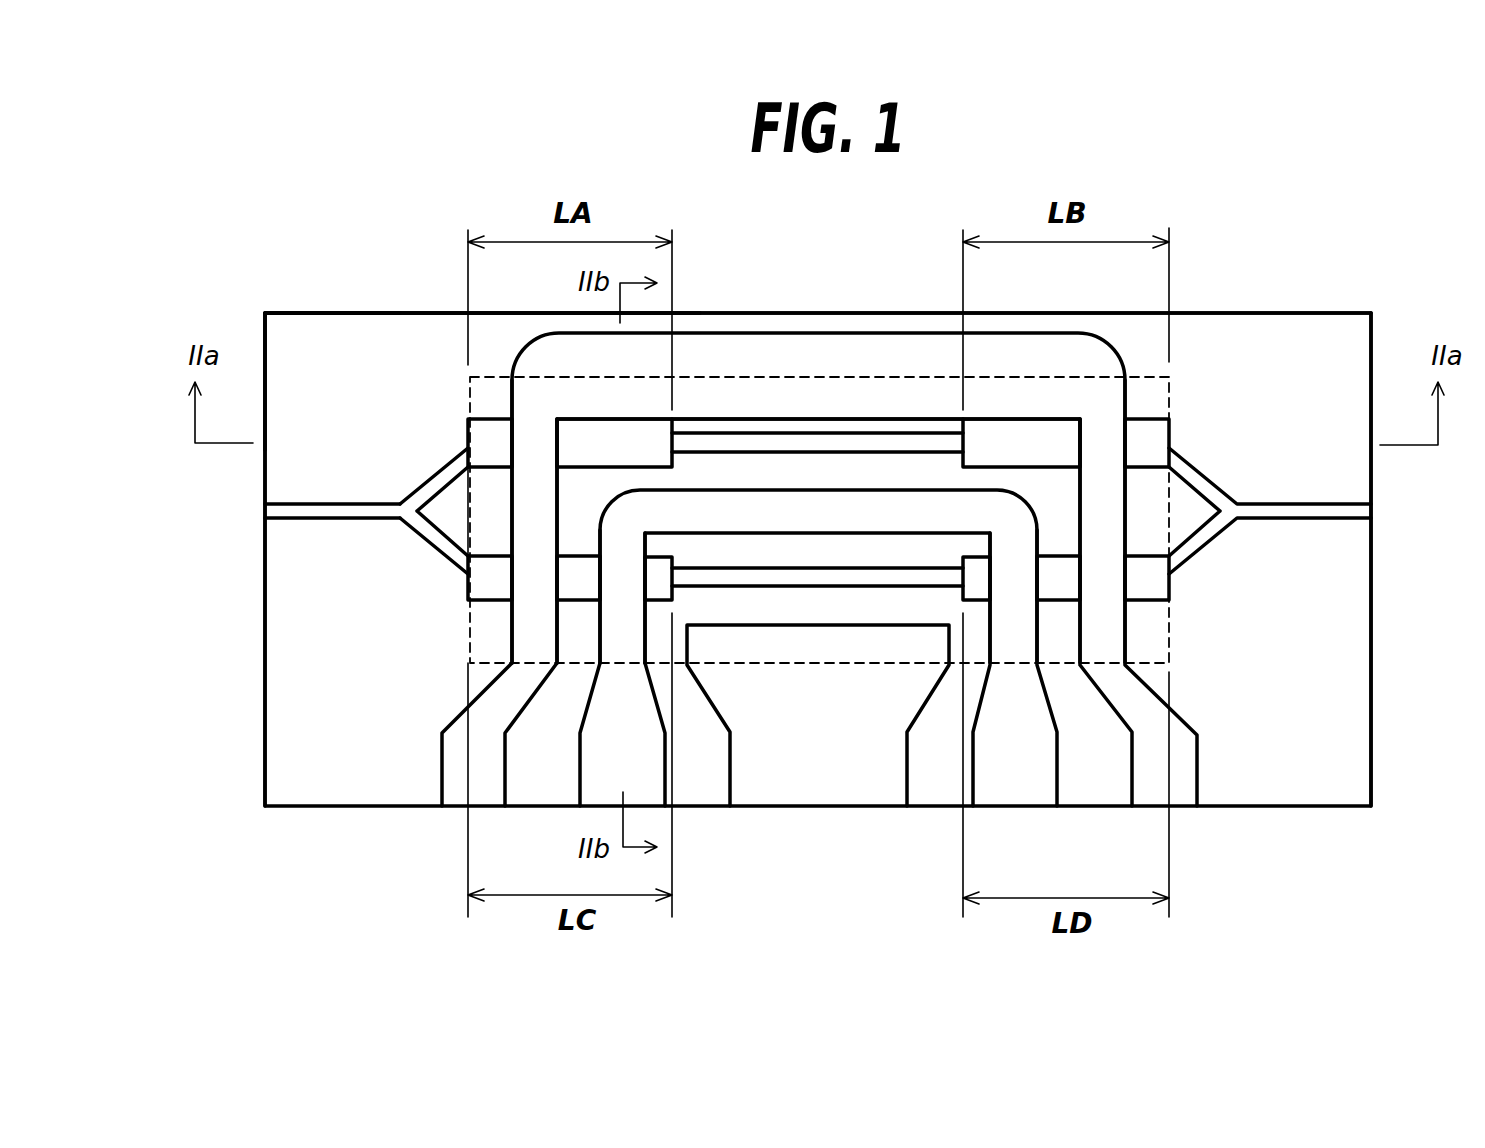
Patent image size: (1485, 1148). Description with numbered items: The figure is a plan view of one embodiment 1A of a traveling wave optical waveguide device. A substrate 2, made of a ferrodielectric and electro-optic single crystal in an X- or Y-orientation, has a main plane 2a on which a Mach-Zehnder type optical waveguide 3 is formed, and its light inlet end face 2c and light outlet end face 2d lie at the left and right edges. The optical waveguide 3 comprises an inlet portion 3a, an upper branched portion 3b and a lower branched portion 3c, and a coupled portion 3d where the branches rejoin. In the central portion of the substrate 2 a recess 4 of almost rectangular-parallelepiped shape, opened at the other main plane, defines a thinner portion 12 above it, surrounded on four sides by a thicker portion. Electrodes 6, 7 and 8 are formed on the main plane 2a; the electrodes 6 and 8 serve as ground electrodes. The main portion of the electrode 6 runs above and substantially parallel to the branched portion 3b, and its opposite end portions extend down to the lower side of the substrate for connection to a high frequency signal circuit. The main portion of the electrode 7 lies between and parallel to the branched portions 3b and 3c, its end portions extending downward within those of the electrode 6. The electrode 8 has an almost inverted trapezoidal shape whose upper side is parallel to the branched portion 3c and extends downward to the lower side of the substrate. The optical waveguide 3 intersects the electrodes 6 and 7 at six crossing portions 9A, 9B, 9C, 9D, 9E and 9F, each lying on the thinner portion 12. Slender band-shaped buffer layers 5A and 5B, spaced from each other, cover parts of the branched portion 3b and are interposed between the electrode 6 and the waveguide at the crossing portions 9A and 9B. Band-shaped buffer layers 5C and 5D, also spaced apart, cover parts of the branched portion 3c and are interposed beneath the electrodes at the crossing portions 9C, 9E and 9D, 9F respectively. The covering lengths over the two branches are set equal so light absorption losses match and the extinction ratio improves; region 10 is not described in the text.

The traveling wave optical waveguide 1A is at (1298, 294).
The substrate 2 is at (1187, 338).
The main plane 2a is at (448, 338).
The light inlet end face 2c is at (263, 658).
The light outlet end face 2d is at (1372, 643).
The optical waveguide 3 is at (404, 474).
The inlet portion 3a is at (305, 507).
The branched portion 3b is at (842, 443).
The branched portion 3c is at (843, 577).
The coupled portion 3d is at (1300, 515).
The recess 4 is at (490, 375).
The buffer layer 5A is at (478, 437).
The buffer layer 5B is at (1020, 432).
The buffer layer 5C is at (480, 585).
The buffer layer 5D is at (1057, 577).
The electrode 6 is at (780, 358).
The electrode 7 is at (600, 755).
The electrode 8 is at (828, 757).
The crossing portion 9A is at (532, 440).
The crossing portion 9B is at (1103, 443).
The crossing portion 9C is at (532, 580).
The crossing portion 9D is at (1112, 577).
The crossing portion 9E is at (622, 580).
The crossing portion 9F is at (1013, 577).
The substrate surface region 10 is at (297, 340).
The thinner portion 12 is at (713, 397).